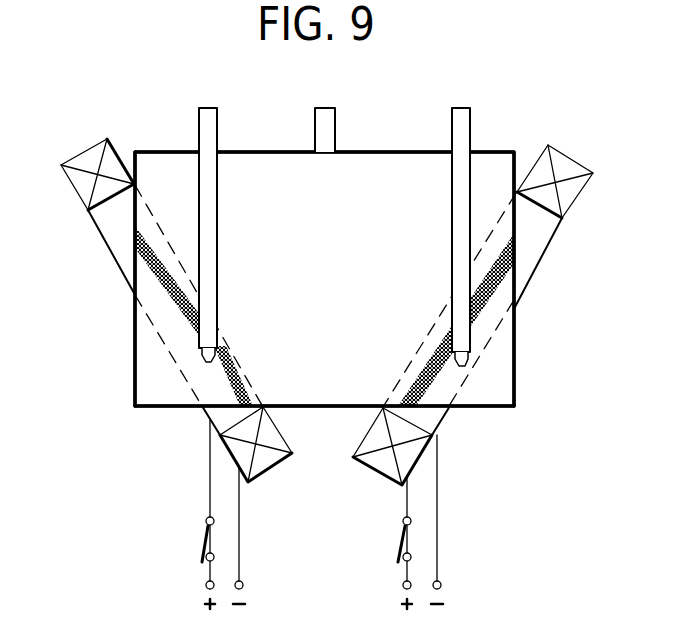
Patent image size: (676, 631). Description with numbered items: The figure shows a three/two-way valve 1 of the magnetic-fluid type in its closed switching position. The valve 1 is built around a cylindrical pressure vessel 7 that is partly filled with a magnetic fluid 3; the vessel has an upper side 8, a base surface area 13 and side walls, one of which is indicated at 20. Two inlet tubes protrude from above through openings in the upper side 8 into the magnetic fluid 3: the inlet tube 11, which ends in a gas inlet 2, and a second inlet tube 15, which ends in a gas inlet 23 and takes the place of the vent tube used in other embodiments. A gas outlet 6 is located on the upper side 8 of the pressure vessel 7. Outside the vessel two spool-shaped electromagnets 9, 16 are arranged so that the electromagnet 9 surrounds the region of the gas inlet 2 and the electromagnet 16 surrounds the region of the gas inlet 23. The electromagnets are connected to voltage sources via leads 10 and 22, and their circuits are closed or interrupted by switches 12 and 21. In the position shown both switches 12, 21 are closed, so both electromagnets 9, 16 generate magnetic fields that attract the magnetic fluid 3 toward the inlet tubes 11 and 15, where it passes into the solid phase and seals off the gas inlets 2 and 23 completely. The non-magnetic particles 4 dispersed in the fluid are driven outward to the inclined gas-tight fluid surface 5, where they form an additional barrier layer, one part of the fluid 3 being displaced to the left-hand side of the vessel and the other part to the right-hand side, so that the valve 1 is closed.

The valve 1 is at (136, 144).
The gas inlet 2 is at (466, 366).
The magnetic fluid 3 is at (153, 380).
The non-magnetic particles 4 is at (243, 383).
The inclined fluid level 5 is at (235, 360).
The gas outlet 6 is at (338, 140).
The pressure vessel 7 is at (516, 312).
The upper side 8 is at (254, 146).
The electromagnet 9 is at (566, 187).
The lead 10 is at (438, 471).
The inlet tube 11 is at (468, 137).
The switch 12 is at (399, 538).
The base surface area 13 is at (153, 410).
The second inlet tube 15 is at (205, 138).
The electromagnet 16 is at (78, 180).
The window 20 is at (130, 312).
The switch 21 is at (203, 538).
The lead 22 is at (208, 473).
The gas inlet 23 is at (202, 353).